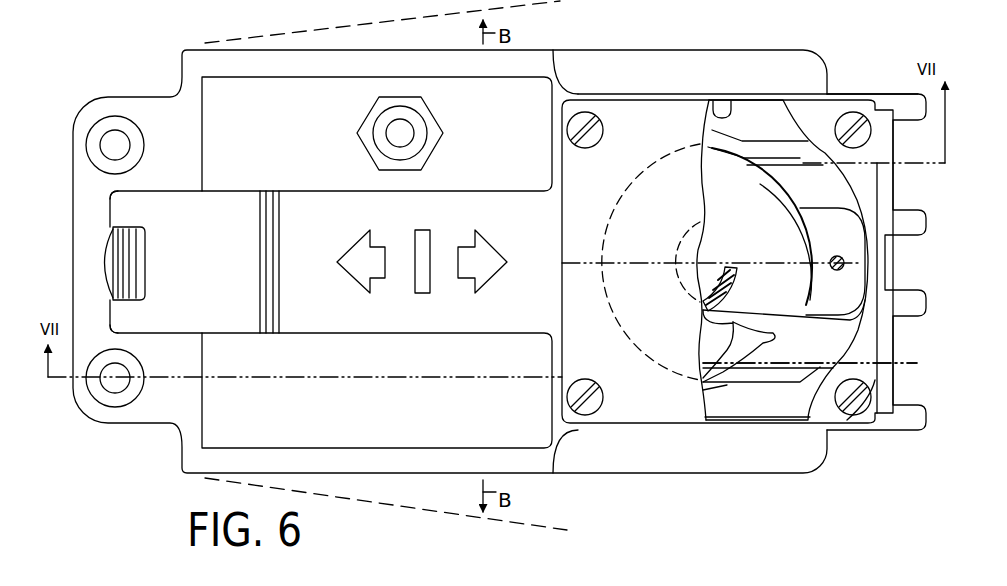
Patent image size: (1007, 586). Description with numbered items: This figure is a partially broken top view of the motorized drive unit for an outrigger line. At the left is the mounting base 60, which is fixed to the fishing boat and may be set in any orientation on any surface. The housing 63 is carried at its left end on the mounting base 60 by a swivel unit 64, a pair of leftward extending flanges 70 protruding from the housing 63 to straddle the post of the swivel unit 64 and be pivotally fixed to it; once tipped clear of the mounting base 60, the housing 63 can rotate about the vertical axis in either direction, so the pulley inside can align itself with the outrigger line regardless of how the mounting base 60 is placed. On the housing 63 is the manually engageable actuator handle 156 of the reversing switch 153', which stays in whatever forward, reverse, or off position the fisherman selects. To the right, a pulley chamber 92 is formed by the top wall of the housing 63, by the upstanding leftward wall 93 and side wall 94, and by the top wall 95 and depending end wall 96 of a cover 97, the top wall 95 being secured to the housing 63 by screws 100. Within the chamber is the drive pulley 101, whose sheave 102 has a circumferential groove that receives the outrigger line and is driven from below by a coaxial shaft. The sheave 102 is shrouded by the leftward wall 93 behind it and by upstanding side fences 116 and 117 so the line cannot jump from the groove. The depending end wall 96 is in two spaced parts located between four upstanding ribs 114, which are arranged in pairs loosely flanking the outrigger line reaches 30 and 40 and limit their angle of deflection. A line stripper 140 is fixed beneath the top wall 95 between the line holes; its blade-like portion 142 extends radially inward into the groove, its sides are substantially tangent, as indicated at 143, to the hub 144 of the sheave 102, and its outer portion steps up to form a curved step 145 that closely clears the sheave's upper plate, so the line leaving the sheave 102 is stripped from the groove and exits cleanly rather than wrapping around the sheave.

The mounting base 60 is at (138, 107).
The housing 63 is at (536, 47).
The swivel unit 64 is at (99, 237).
The leftward extending flanges 70 is at (132, 205).
The leftward wall 93 is at (551, 153).
The actuator handle 156 is at (402, 132).
The reversing switch 153' is at (434, 140).
The cover 97 is at (671, 124).
The screws 100 is at (600, 133).
The top wall 95 is at (646, 262).
The hub 144 is at (672, 326).
The drive pulley 101 is at (781, 186).
The pulley chamber 92 is at (727, 112).
The side wall 94 is at (740, 93).
The side fence 117 is at (795, 147).
The outrigger line reach 30 is at (790, 163).
The curved step 145 is at (800, 238).
The line stripper 140 is at (855, 209).
The blade-like portion 142 is at (757, 289).
The tangent 143 is at (727, 344).
The sheave 102 is at (760, 344).
The outrigger line reach 40 is at (818, 370).
The side fence 116 is at (758, 376).
The depending end wall 96 is at (892, 365).
The upstanding ribs 114 is at (908, 103).